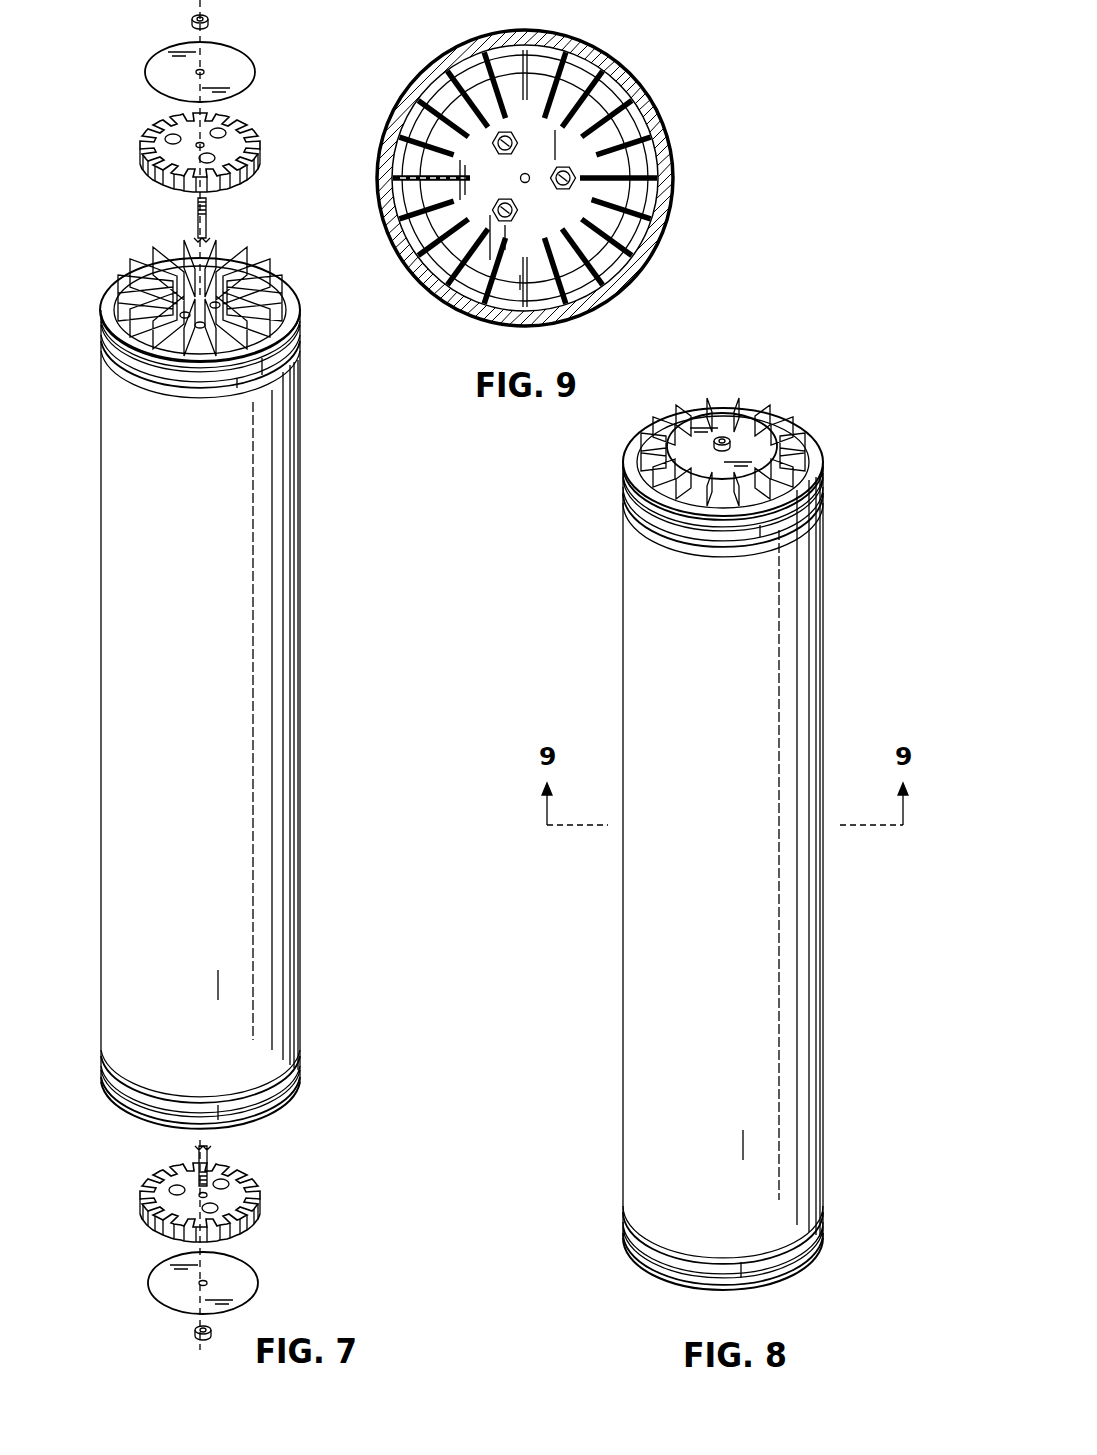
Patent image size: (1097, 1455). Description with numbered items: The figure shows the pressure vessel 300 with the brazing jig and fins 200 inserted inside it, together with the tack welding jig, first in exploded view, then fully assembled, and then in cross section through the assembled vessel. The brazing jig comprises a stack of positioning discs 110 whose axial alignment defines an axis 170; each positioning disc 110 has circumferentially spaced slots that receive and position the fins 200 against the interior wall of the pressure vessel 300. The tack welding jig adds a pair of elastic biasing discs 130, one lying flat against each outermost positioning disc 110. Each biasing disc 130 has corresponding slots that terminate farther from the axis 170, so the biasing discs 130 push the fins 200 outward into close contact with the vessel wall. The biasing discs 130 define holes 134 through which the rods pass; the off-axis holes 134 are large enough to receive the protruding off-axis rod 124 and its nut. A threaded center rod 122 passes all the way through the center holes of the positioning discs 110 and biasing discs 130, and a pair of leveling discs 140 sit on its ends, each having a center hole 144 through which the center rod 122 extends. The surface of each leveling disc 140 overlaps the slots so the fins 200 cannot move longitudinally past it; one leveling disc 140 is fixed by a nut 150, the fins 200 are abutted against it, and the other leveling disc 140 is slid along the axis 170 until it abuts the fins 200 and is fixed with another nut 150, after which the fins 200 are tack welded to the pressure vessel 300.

In FIG. 7, the positioning discs 110 is at (188, 300).
In FIG. 9, the positioning discs 110 is at (610, 133).
In FIG. 7, the center rod 122 is at (208, 218).
In FIG. 9, the center rod 122 is at (528, 181).
In FIG. 9, the off-axis rod 124 is at (497, 218).
In FIG. 7, the biasing discs 130 is at (140, 135).
In FIG. 7, the holes 134 is at (212, 144).
In FIG. 7, the leveling discs 140 is at (160, 65).
In FIG. 8, the leveling discs 140 is at (750, 430).
In FIG. 7, the center hole 144 is at (204, 72).
In FIG. 7, the nut 150 is at (188, 23).
In FIG. 7, the axis 170 is at (205, 50).
In FIG. 7, the fins 200 is at (112, 312).
In FIG. 8, the fins 200 is at (625, 478).
In FIG. 9, the fins 200 is at (672, 200).
In FIG. 7, the pressure vessel 300 is at (125, 612).
In FIG. 8, the pressure vessel 300 is at (650, 630).
In FIG. 9, the pressure vessel 300 is at (650, 237).